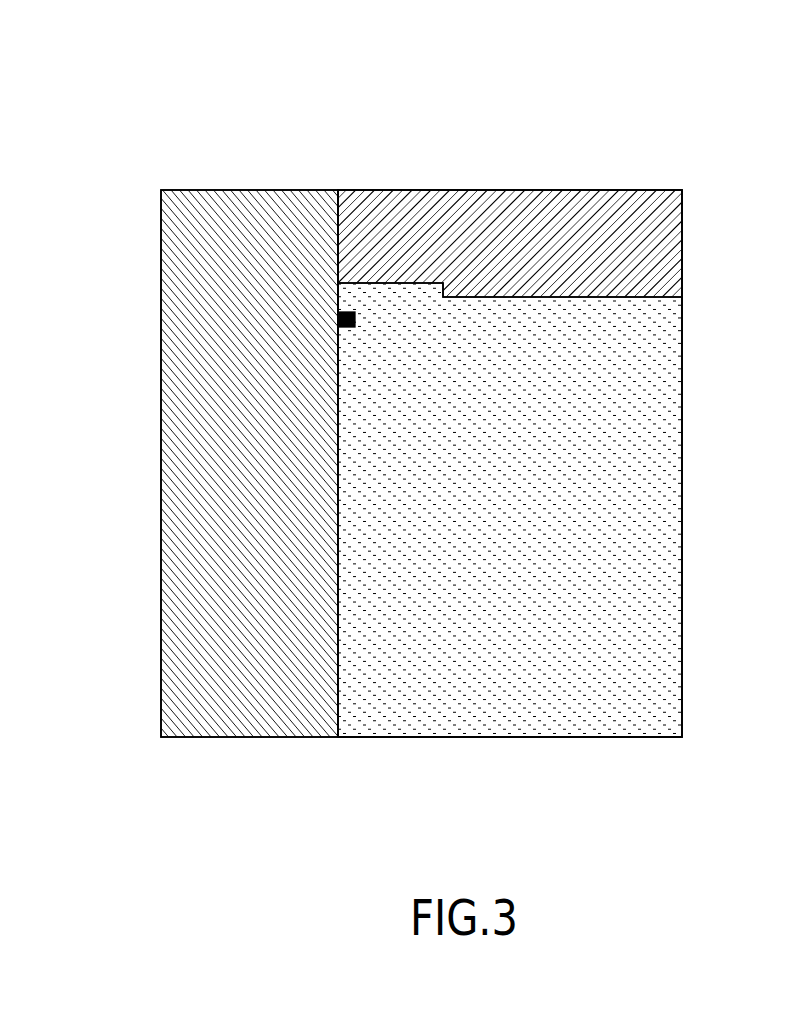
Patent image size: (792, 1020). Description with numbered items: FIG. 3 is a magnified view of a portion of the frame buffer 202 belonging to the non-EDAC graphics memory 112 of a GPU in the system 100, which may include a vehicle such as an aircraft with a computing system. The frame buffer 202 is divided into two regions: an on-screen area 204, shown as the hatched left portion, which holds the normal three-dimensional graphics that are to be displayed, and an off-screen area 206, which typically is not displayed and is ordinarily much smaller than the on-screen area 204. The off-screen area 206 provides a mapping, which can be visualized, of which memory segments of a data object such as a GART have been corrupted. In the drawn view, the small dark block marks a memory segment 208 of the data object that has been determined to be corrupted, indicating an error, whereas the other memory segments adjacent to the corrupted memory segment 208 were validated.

The system 100 is at (190, 53).
The non-EDAC graphics memory 112 is at (362, 117).
The frame buffer 202 is at (395, 162).
The on-screen area 204 is at (161, 440).
The off-screen area 206 is at (682, 523).
The memory segment 208 is at (339, 319).